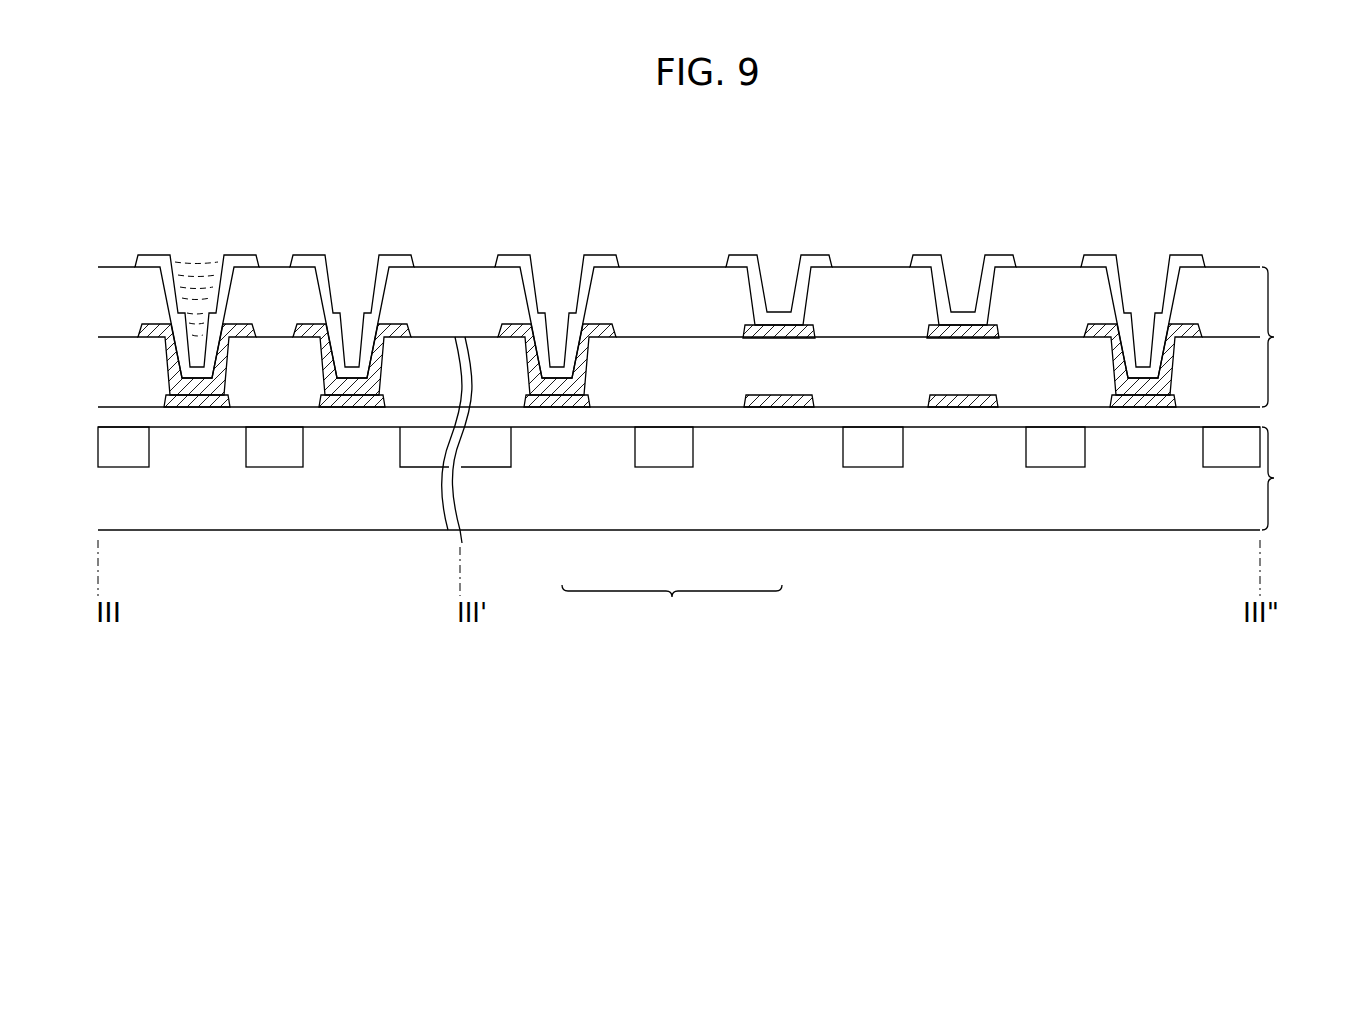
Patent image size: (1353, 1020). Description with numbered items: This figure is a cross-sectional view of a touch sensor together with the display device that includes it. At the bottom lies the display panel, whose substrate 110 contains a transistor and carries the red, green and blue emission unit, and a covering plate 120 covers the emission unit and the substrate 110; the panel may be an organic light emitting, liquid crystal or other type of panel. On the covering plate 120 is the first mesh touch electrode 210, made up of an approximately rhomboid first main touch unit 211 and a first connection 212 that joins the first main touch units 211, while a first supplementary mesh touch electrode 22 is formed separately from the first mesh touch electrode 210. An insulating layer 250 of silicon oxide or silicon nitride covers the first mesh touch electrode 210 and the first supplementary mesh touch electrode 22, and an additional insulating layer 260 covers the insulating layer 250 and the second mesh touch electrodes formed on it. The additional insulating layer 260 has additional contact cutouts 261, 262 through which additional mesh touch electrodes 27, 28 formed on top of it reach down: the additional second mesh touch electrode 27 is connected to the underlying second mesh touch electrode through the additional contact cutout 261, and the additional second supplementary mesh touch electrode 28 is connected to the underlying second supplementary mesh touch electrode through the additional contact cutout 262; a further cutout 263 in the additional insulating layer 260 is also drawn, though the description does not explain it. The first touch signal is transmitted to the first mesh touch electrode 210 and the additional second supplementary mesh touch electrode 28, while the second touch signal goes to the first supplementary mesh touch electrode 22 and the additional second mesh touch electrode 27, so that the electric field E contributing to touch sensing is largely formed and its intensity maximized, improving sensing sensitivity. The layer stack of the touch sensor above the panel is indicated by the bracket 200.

The substrate 110 is at (1063, 558).
The covering plate 120 is at (825, 428).
The pixel defining structure 200 is at (1291, 337).
The first mesh touch electrode 210 is at (672, 606).
The first main touch unit 211 is at (212, 408).
The first connection 212 is at (762, 408).
The first supplementary mesh touch electrode 22 is at (372, 408).
The insulating layer 250 is at (665, 365).
The additional insulating layer 260 is at (1235, 290).
The additional contact cutout 261 is at (168, 300).
The additional contact cutout 262 is at (325, 297).
The third organic emission layer 263 is at (756, 295).
The additional second mesh touch electrode 27 is at (240, 262).
The additional second supplementary mesh touch electrode 28 is at (307, 262).
The electric field E is at (197, 238).